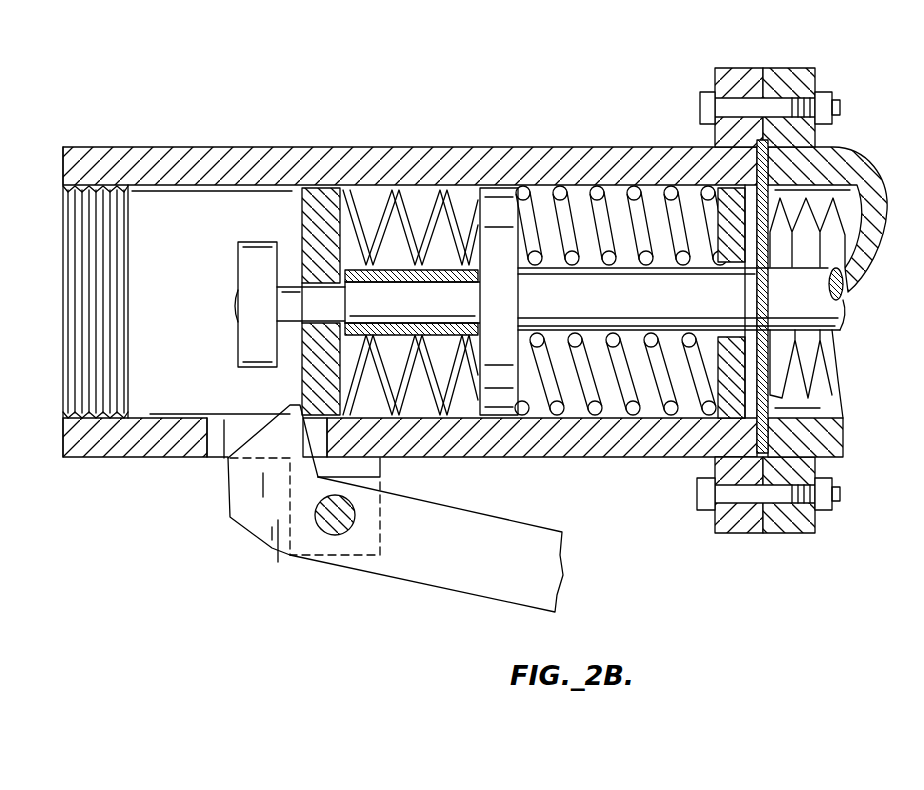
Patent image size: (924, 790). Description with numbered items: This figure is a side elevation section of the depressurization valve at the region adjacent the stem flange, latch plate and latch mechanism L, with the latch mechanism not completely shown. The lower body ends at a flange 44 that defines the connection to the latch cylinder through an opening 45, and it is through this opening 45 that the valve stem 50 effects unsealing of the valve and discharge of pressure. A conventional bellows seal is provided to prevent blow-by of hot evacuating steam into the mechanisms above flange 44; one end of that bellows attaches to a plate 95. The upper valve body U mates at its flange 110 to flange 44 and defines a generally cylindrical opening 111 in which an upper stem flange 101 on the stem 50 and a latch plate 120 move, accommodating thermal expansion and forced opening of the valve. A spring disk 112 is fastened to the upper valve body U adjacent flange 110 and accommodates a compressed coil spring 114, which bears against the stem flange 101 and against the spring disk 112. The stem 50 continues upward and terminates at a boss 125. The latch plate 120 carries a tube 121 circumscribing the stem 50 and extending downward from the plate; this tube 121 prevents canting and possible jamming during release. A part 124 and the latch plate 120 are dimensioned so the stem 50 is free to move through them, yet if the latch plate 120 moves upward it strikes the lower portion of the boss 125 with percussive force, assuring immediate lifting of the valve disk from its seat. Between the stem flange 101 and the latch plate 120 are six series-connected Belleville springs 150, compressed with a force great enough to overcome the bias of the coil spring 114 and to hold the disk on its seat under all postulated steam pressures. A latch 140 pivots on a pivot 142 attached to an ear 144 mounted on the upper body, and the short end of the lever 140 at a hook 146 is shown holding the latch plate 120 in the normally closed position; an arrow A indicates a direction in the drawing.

The flange 44 is at (795, 68).
The opening 45 is at (822, 382).
The valve stem 50 is at (820, 300).
The plate 95 is at (772, 205).
The upper stem flange 101 is at (493, 197).
The flange 110 is at (728, 68).
The cylindrical opening 111 is at (155, 405).
The spring disk 112 is at (720, 398).
The coil spring 114 is at (597, 190).
The latch plate 120 is at (323, 190).
The tube 121 is at (425, 268).
The part 124 is at (298, 292).
The boss 125 is at (247, 262).
The latch 140 is at (485, 548).
The pivot 142 is at (333, 520).
The ear 144 is at (380, 476).
The hook 146 is at (300, 410).
The Belleville springs 150 is at (380, 203).
The direction arrow A is at (552, 52).
The upper valve body U is at (276, 138).
The latch mechanism L is at (246, 384).